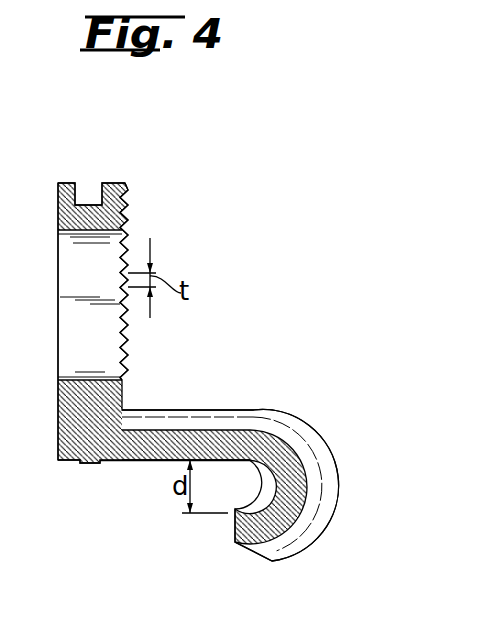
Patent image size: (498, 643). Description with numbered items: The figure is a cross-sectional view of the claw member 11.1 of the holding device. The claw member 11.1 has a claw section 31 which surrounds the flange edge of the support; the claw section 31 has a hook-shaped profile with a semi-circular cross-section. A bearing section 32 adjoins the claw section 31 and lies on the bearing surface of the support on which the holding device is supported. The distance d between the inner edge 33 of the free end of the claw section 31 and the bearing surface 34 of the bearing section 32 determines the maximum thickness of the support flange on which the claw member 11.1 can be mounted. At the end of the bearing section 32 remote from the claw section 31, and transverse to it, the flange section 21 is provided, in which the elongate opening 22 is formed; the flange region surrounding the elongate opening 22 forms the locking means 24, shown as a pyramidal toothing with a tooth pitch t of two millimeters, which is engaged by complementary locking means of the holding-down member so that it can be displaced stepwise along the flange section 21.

The claw member 11.1 is at (250, 236).
The flange section 21 is at (72, 189).
The elongate opening 22 is at (72, 332).
The locking means 24 is at (128, 203).
The claw section 31 is at (296, 482).
The bearing section 32 is at (208, 438).
The inner edge 33 is at (238, 513).
The bearing surface 34 is at (141, 463).